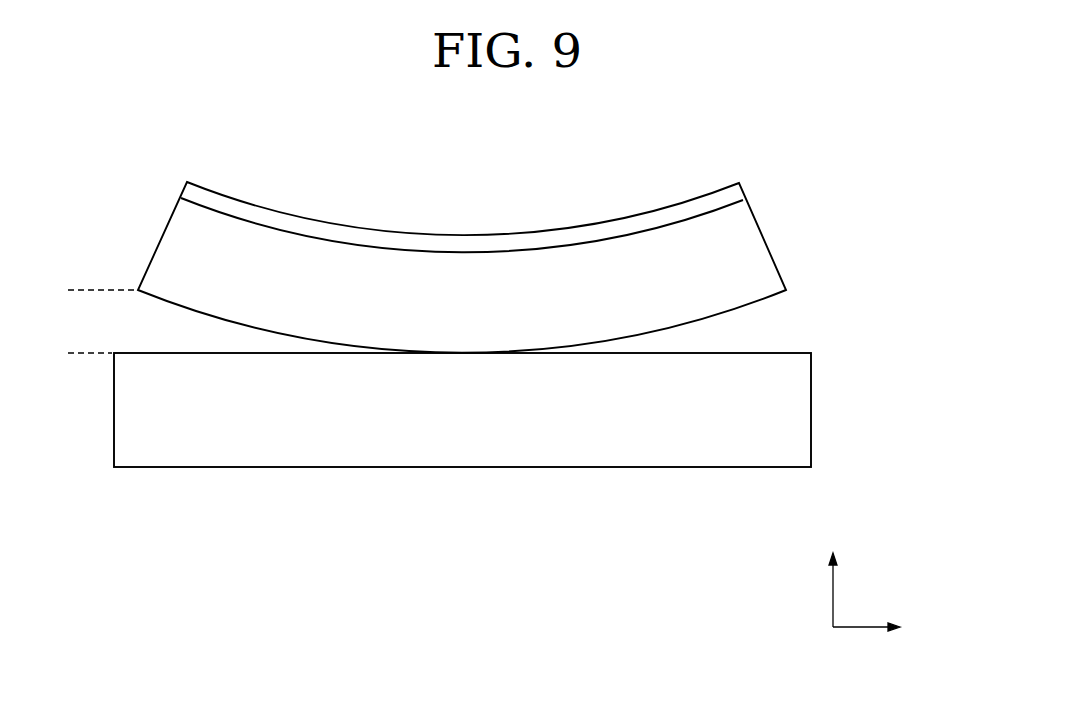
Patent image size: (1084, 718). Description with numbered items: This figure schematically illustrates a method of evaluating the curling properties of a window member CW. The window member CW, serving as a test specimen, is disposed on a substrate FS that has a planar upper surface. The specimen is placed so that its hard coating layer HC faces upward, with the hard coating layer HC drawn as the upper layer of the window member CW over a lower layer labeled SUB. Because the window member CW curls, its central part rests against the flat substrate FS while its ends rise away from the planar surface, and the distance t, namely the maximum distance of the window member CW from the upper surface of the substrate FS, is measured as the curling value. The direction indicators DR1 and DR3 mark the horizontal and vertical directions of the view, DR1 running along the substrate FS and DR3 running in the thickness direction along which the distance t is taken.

The window member CW is at (540, 265).
The hard coating layer HC is at (736, 187).
The substrate SUB is at (745, 246).
The substrate FS is at (790, 415).
The distance t is at (79, 290).
The first direction DR1 is at (886, 629).
The third direction DR3 is at (834, 577).